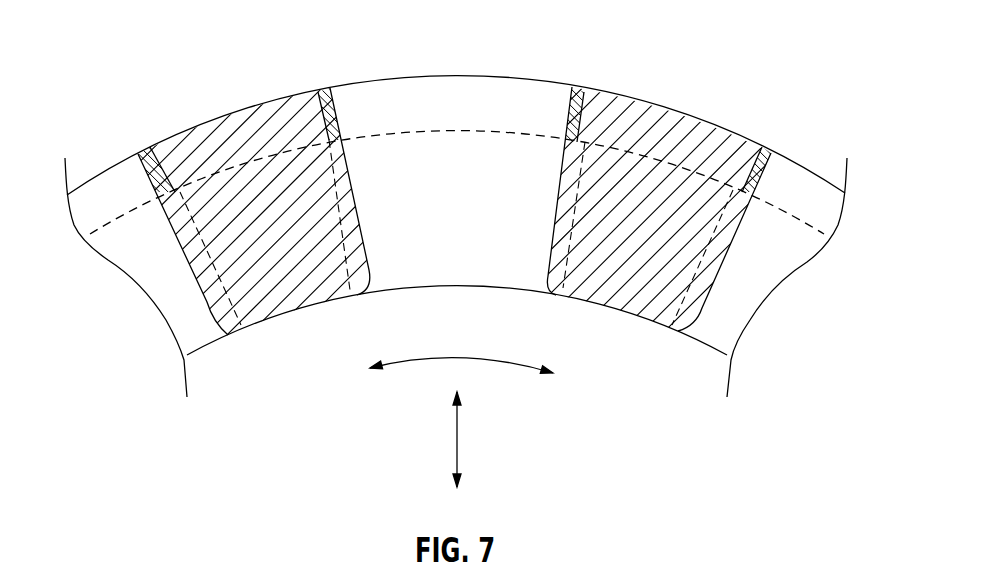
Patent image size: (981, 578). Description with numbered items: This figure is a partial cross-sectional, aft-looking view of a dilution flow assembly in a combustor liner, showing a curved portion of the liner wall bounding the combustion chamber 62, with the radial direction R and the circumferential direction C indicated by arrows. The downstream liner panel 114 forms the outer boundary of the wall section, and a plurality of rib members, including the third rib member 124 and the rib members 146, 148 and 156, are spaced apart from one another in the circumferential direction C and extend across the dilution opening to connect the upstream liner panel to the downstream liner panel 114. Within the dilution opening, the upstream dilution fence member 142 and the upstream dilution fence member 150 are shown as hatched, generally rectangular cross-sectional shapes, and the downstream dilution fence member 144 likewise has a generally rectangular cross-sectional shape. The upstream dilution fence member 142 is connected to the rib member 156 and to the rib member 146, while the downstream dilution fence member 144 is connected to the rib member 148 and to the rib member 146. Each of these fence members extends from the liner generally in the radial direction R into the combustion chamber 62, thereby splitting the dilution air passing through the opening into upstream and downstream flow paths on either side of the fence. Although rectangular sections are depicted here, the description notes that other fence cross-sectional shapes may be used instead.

The combustion chamber 62 is at (298, 402).
The downstream liner panel 114 is at (438, 100).
The third rib member 124 is at (148, 163).
The upstream dilution fence member 142 is at (618, 293).
The downstream dilution fence member 144 is at (432, 258).
The rib member 146 is at (580, 100).
The rib member 148 is at (326, 97).
The upstream dilution fence member 150 is at (298, 277).
The rib member 156 is at (763, 157).
The circumferential direction C is at (425, 363).
The radial direction R is at (458, 438).